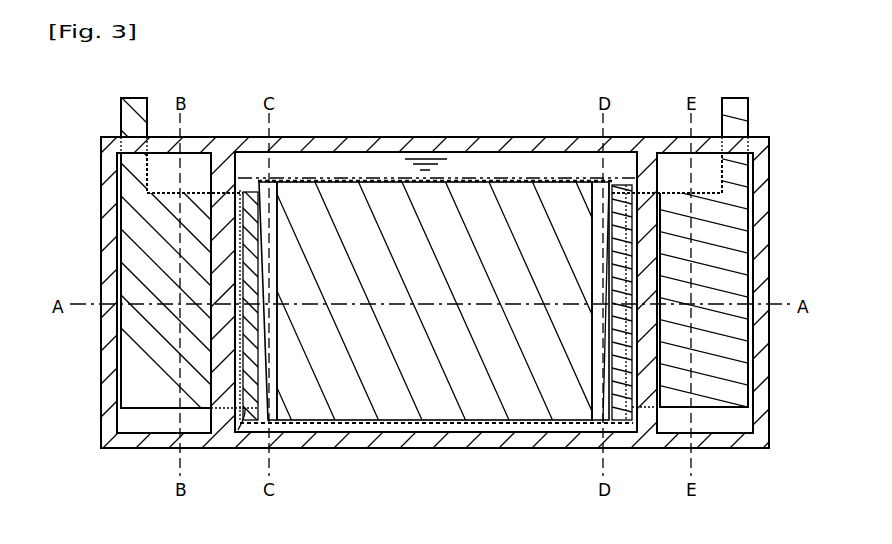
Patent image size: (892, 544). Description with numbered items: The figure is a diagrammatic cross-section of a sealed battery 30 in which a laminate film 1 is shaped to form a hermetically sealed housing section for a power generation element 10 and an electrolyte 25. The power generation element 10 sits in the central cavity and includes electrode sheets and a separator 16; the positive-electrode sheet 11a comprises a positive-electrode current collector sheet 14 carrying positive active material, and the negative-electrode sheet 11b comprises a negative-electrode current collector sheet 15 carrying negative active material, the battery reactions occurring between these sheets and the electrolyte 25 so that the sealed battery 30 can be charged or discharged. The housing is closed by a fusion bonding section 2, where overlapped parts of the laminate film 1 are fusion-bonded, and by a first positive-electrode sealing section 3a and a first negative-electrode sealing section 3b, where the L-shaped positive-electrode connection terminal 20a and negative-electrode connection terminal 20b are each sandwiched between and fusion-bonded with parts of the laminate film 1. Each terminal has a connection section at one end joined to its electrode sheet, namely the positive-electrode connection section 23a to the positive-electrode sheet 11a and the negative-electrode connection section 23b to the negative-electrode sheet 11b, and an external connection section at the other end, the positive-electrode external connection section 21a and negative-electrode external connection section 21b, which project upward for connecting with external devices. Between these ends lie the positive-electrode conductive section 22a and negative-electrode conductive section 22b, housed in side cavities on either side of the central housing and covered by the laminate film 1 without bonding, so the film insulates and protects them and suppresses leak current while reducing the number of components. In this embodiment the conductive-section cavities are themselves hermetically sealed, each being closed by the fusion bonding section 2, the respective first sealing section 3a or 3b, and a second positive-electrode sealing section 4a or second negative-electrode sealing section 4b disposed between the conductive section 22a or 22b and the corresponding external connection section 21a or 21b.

The laminate film 1 is at (446, 289).
The fusion bonding section 2 is at (108, 291).
The first positive-electrode sealing section 3a is at (648, 337).
The first negative-electrode sealing section 3b is at (222, 372).
The second positive-electrode sealing section 4a is at (733, 145).
The second negative-electrode sealing section 4b is at (128, 134).
The power generation element 10 is at (500, 177).
The positive-electrode sheet 11a is at (638, 333).
The negative-electrode sheet 11b is at (304, 267).
The positive-electrode current collector sheet 14 is at (610, 415).
The negative-electrode current collector sheet 15 is at (262, 187).
The separator 16 is at (385, 390).
The positive-electrode connection terminal 20a is at (726, 262).
The negative-electrode connection terminal 20b is at (275, 293).
The positive-electrode external connection section 21a is at (733, 110).
The negative-electrode external connection section 21b is at (135, 107).
The positive-electrode conductive section 22a is at (735, 228).
The negative-electrode conductive section 22b is at (162, 248).
The positive-electrode connection section 23a is at (616, 187).
The negative-electrode connection section 23b is at (245, 407).
The electrolyte 25 is at (455, 168).
The sealed battery 30 is at (435, 279).